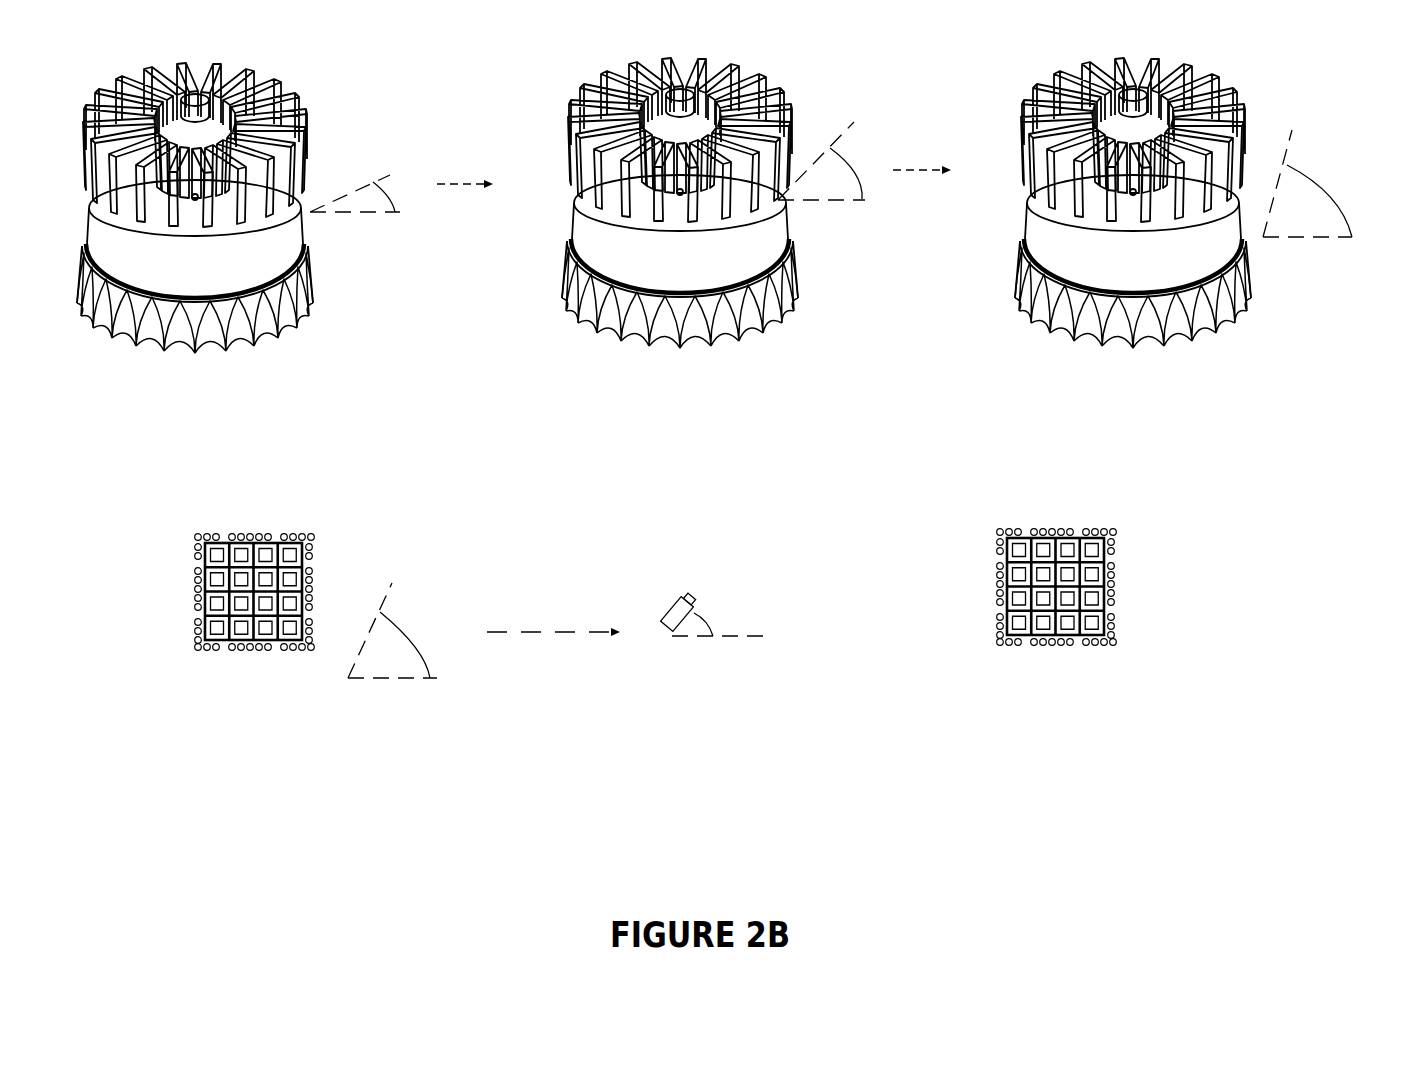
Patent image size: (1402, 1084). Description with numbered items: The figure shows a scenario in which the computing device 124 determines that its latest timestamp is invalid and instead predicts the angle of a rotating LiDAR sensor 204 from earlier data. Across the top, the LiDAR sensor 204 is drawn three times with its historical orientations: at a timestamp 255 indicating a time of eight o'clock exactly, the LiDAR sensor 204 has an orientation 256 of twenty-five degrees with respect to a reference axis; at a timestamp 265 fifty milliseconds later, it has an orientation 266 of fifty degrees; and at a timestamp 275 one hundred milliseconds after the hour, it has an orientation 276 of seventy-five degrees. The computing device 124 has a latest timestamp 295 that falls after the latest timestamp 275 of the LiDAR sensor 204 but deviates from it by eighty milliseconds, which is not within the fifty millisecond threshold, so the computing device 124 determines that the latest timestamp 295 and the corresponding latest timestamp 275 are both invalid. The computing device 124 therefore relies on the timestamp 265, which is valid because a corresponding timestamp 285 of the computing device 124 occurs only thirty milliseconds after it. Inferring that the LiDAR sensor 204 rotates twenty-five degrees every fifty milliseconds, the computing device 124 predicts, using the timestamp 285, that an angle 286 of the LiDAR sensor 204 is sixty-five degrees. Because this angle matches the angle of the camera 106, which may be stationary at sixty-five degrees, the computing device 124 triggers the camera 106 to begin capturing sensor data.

The LiDAR sensor 204 is at (97, 193).
The computing device 124 is at (190, 608).
The camera 106 is at (667, 641).
The orientation 256 is at (377, 222).
The orientation 266 is at (841, 187).
The orientation 276 is at (1326, 210).
The angle 286 is at (404, 658).
The timestamp 255 is at (185, 432).
The timestamp 265 is at (670, 425).
The latest timestamp 275 is at (1120, 425).
The timestamp 285 is at (252, 712).
The latest timestamp 295 is at (1055, 705).